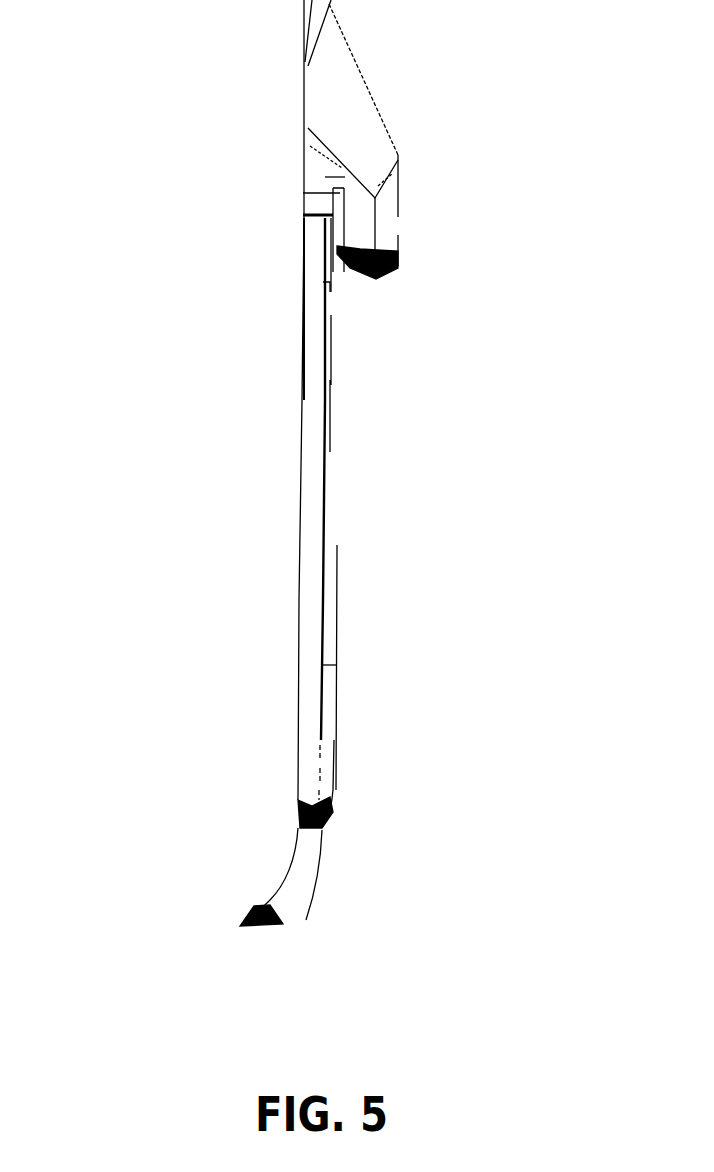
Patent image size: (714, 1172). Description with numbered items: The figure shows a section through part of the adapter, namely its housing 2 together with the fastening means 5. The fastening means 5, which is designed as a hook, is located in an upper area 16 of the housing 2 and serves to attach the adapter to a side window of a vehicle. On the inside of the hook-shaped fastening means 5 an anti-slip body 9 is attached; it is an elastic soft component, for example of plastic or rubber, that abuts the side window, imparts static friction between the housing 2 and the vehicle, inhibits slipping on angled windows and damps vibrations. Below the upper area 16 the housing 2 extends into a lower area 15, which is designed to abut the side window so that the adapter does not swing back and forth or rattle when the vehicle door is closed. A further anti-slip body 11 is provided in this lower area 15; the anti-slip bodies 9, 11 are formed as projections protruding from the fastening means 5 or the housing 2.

The housing 2 is at (303, 285).
The fastening means 5 is at (385, 277).
The anti-slip body 9 is at (337, 257).
The anti-slip body 11 is at (337, 712).
The lower area 15 is at (297, 697).
The upper area 16 is at (303, 122).